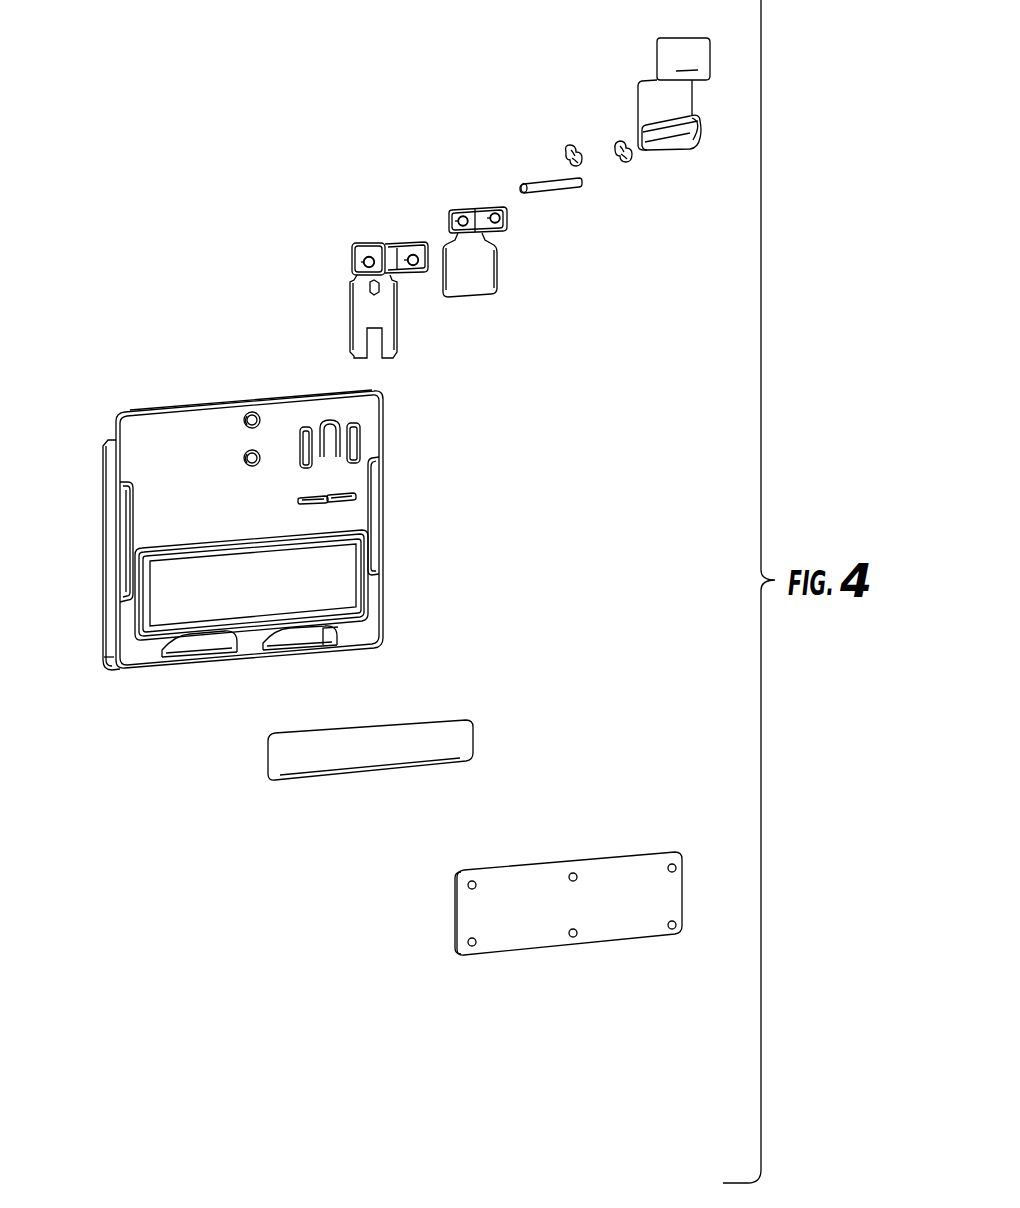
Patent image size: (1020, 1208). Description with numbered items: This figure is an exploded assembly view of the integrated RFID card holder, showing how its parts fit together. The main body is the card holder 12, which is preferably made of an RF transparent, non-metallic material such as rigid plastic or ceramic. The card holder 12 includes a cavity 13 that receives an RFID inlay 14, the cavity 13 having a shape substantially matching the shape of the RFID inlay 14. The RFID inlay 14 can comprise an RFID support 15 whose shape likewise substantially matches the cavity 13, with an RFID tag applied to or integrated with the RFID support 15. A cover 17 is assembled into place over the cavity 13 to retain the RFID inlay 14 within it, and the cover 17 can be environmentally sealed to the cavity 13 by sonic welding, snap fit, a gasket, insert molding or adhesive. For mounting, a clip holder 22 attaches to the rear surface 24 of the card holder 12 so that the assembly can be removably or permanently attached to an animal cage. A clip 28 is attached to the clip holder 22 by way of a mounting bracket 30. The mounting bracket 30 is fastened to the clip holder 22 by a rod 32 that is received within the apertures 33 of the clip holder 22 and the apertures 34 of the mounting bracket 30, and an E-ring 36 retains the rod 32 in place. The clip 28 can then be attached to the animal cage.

The card holder 12 is at (113, 430).
The cavity 13 is at (345, 570).
The RFID inlay 14 is at (438, 730).
The RFID support 15 is at (346, 765).
The cover 17 is at (533, 880).
The clip holder 22 is at (357, 318).
The rear surface 24 is at (213, 396).
The clip 28 is at (682, 45).
The mounting bracket 30 is at (484, 216).
The rod 32 is at (541, 183).
The apertures 33 is at (412, 257).
The apertures 34 is at (460, 216).
The E-ring 36 is at (620, 150).